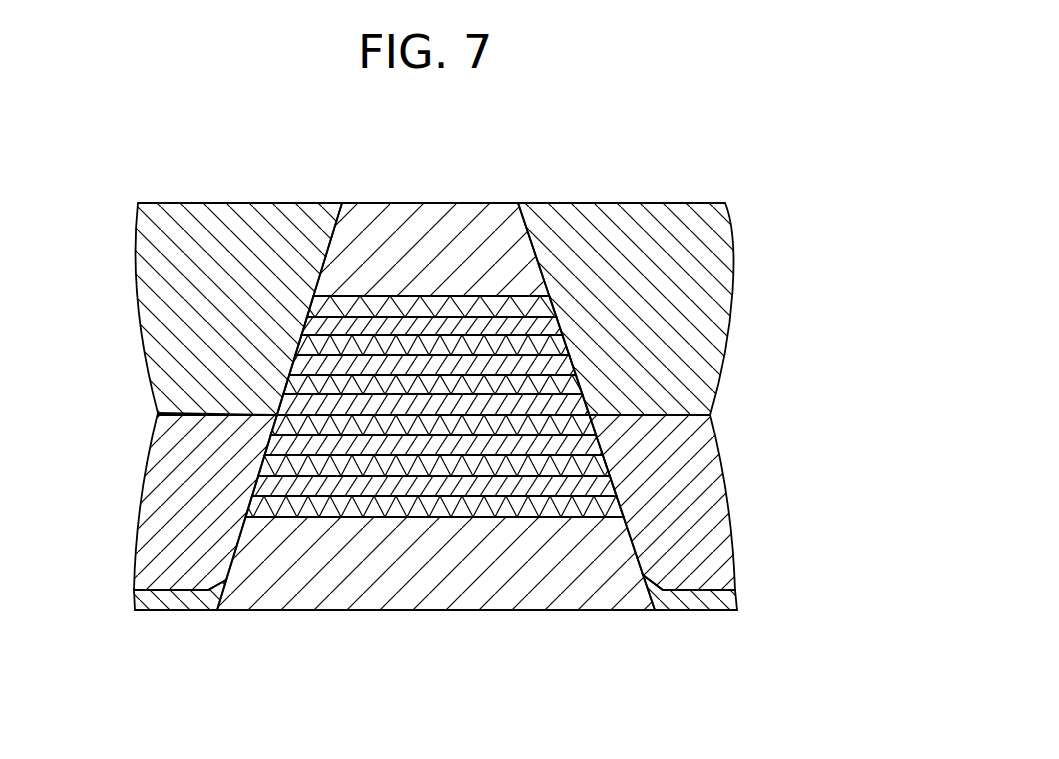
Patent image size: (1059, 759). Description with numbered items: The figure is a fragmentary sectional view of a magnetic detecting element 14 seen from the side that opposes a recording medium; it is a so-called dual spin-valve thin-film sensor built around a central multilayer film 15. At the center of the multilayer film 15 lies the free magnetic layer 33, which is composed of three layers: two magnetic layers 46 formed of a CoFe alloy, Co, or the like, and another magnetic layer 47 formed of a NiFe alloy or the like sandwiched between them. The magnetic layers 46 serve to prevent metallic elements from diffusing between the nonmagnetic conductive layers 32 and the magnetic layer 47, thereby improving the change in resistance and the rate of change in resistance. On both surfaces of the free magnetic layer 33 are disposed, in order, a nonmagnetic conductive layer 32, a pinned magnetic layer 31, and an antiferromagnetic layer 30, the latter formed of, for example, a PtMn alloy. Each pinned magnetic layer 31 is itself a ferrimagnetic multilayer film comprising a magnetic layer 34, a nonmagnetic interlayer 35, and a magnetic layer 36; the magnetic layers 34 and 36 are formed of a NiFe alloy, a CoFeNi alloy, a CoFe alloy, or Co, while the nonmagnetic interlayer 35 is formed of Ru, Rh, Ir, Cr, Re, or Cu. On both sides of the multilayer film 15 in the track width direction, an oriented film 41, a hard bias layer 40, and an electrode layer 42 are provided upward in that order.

The magnetic detecting element 14 is at (433, 175).
The multilayer film 15 is at (390, 200).
The antiferromagnetic layer 30 is at (477, 225).
The pinned magnetic layer 31 is at (783, 212).
The nonmagnetic conductive layer 32 is at (547, 370).
The free magnetic layer 33 is at (783, 323).
The magnetic layer 34 is at (550, 305).
The nonmagnetic interlayer 35 is at (537, 328).
The magnetic layer 36 is at (540, 347).
The hard bias layer 40 is at (160, 522).
The oriented film 41 is at (145, 600).
The electrode layer 42 is at (158, 293).
The magnetic layer 46 is at (545, 388).
The magnetic layer 47 is at (557, 410).